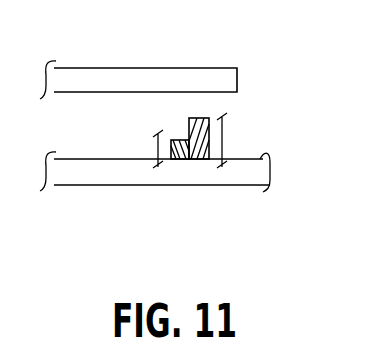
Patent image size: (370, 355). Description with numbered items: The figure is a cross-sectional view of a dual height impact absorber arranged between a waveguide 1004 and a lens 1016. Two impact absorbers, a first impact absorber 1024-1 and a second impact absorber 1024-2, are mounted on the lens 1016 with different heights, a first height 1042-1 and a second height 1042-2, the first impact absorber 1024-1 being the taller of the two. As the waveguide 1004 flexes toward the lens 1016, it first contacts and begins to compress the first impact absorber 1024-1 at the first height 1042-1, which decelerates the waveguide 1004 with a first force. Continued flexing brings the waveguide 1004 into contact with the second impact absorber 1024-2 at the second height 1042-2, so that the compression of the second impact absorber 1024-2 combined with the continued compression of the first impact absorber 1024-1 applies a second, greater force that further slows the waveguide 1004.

The waveguide 1004 is at (141, 76).
The lens 1016 is at (99, 181).
The first impact absorber 1024-1 is at (197, 160).
The second impact absorber 1024-2 is at (185, 160).
The first height 1042-1 is at (223, 141).
The second height 1042-2 is at (158, 145).